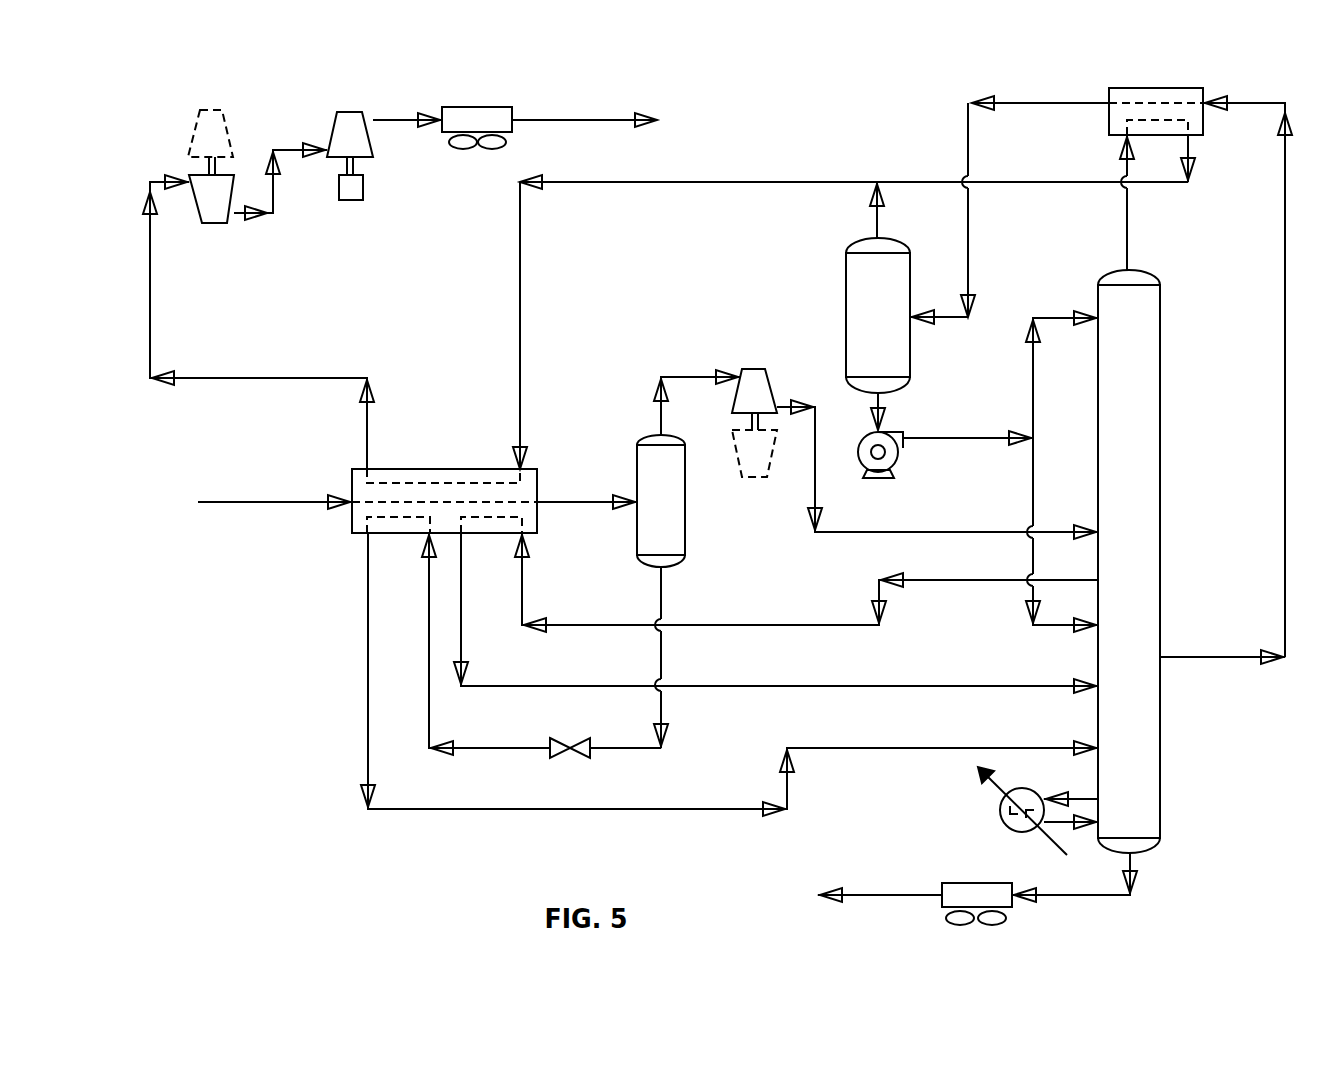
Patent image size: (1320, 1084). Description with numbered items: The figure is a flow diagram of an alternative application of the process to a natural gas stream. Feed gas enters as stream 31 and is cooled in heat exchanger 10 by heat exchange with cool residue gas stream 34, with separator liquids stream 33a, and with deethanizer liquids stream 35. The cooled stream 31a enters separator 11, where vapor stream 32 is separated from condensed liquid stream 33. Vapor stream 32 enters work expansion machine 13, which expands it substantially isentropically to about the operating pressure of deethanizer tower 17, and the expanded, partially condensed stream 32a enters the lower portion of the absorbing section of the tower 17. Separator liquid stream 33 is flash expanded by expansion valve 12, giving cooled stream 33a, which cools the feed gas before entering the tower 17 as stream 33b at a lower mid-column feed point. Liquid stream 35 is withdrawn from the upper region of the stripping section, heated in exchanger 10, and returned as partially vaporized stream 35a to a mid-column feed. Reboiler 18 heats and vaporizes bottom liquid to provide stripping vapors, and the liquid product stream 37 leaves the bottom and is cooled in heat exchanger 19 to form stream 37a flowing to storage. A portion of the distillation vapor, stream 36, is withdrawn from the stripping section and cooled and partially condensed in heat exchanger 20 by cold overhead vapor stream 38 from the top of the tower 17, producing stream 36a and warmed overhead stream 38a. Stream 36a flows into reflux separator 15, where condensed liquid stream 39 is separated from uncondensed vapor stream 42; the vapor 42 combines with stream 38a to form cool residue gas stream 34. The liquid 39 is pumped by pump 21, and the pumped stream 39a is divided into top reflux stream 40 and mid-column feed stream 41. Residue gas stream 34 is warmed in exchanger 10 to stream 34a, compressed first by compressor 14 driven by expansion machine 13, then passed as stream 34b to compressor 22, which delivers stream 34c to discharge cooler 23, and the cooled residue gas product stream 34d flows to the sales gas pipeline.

The heat exchanger 10 is at (447, 468).
The separator 11 is at (686, 530).
The expansion valve 12 is at (553, 738).
The work expansion machine 13 is at (212, 110).
The compressor 14 is at (214, 223).
The reflux separator 15 is at (845, 320).
The deethanizer tower 17 is at (1162, 442).
The reboiler 18 is at (999, 812).
The heat exchanger 19 is at (975, 882).
The heat exchanger 20 is at (1157, 138).
The pump 21 is at (860, 466).
The compressor 22 is at (352, 110).
The discharge cooler 23 is at (478, 105).
The feed gas stream 31 is at (215, 500).
The cooled stream 31a is at (582, 506).
The vapor stream 32 is at (690, 380).
The expanded stream 32a is at (957, 535).
The condensed liquid stream 33 is at (663, 595).
The expanded separator liquid stream 33a is at (500, 752).
The heated separator liquid stream 33b is at (880, 752).
The cool residue gas stream 34 is at (690, 185).
The warmed residue gas stream 34a is at (243, 382).
The compressed residue gas stream 34b is at (275, 185).
The residue gas stream 34c is at (395, 118).
The residue gas product stream 34d is at (628, 119).
The liquid stream 35 is at (787, 628).
The partially vaporized liquid stream 35a is at (973, 690).
The distillation vapor stream 36 is at (1250, 107).
The cooled distillation vapor stream 36a is at (1047, 107).
The liquid product stream 37 is at (1085, 898).
The cooled liquid product stream 37a is at (882, 898).
The deethanizer overhead vapor stream 38 is at (1125, 247).
The warmed deethanizer overhead stream 38a is at (1047, 185).
The condensed liquid stream 39 is at (876, 410).
The pumped stream 39a is at (957, 442).
The top feed stream 40 is at (1038, 408).
The mid-column feed stream 41 is at (1038, 470).
The uncondensed vapor stream 42 is at (872, 214).